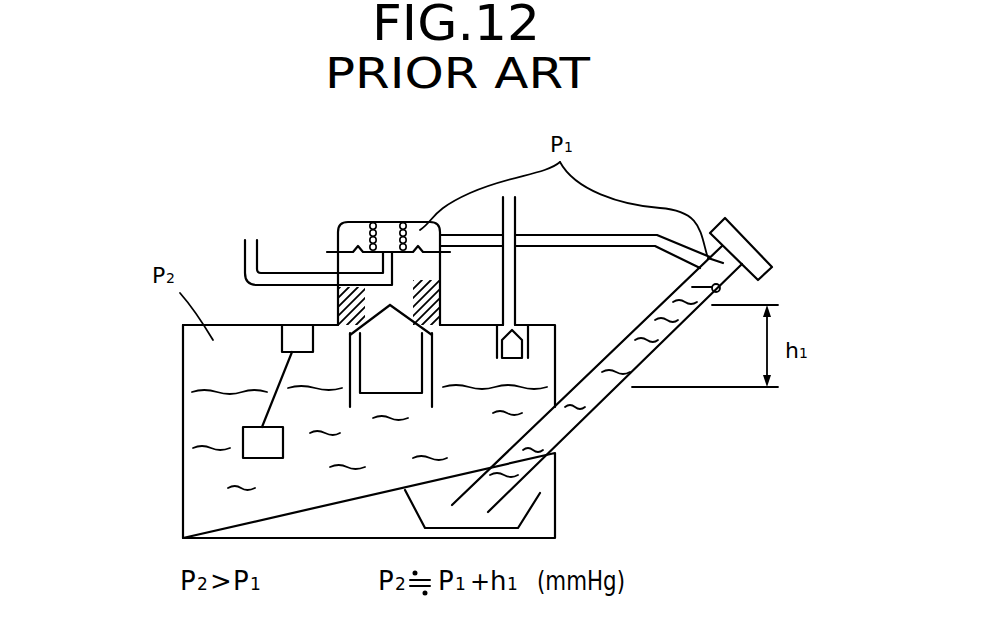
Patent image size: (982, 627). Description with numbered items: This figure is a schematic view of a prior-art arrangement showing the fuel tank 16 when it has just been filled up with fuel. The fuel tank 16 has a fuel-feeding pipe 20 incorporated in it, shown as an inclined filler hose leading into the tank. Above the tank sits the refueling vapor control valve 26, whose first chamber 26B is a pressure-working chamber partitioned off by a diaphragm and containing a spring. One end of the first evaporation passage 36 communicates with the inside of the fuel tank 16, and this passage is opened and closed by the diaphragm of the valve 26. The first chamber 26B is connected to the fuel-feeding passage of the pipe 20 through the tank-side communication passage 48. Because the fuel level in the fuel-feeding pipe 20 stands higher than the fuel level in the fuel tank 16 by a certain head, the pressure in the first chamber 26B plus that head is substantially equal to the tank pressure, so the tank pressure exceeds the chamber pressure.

The fuel tank 16 is at (183, 457).
The fuel-feeding pipe 20 is at (662, 348).
The refueling vapor control valve 26 is at (385, 222).
The first chamber 26B is at (410, 230).
The first evaporation passage 36 is at (283, 275).
The tank-side communication passage 48 is at (598, 247).